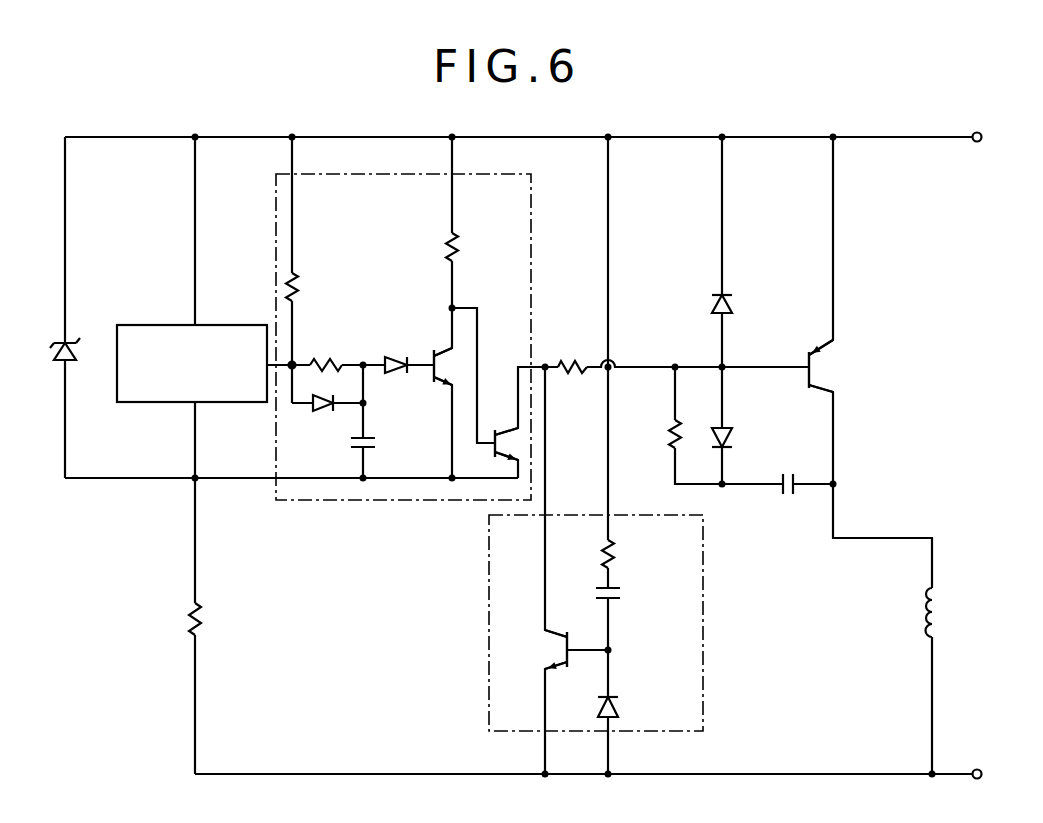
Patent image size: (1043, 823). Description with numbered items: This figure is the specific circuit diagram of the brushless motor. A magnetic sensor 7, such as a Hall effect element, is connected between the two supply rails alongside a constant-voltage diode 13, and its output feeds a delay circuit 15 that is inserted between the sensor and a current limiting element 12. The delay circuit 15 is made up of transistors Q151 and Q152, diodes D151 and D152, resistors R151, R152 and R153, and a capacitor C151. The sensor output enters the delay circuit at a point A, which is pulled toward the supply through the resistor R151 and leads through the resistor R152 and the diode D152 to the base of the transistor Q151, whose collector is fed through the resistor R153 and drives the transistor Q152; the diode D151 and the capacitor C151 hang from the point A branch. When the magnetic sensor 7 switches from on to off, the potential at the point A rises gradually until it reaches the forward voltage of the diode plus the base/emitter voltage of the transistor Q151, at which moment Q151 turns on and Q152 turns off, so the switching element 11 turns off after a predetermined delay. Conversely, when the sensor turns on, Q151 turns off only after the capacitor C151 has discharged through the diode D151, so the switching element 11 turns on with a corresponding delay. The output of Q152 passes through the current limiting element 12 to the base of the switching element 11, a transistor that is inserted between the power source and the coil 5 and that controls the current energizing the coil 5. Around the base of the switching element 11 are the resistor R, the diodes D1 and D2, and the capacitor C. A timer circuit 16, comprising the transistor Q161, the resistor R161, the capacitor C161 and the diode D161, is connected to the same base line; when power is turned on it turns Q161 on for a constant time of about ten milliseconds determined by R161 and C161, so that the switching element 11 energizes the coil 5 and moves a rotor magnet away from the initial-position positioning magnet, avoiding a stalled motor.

The constant-voltage diode 13 is at (70, 340).
The magnetic sensor 7 is at (161, 403).
The point A is at (296, 360).
The resistor R151 is at (299, 285).
The resistor R152 is at (332, 357).
The diode D152 is at (397, 355).
The transistor Q151 is at (444, 367).
The resistor R153 is at (486, 233).
The delay circuit 15 is at (531, 208).
The diode D151 is at (322, 412).
The capacitor C151 is at (378, 445).
The transistor Q152 is at (506, 441).
The current limiting element 12 is at (565, 358).
The resistor R is at (668, 428).
The diode D1 is at (732, 310).
The diode D2 is at (732, 436).
The switching element 11 is at (825, 370).
The capacitor C is at (786, 496).
The coil 5 is at (938, 615).
The resistor R161 is at (615, 552).
The capacitor C161 is at (622, 596).
The transistor Q161 is at (558, 650).
The diode D161 is at (618, 705).
The timer circuit 16 is at (703, 668).